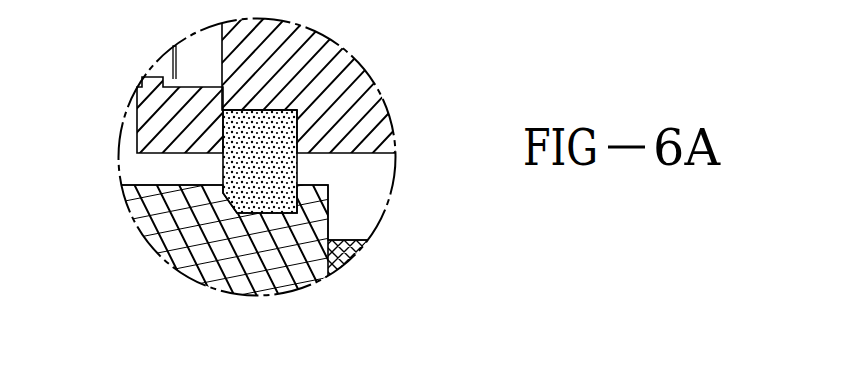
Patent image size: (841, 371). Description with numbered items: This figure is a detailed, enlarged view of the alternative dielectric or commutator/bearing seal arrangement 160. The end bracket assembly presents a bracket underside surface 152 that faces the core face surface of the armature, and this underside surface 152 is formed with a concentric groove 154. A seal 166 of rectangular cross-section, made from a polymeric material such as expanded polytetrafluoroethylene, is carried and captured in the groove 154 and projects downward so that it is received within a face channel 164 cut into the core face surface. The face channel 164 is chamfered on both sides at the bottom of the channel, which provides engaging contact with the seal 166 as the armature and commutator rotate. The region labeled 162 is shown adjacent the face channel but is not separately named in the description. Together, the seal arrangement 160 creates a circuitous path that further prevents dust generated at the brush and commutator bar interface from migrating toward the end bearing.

The bracket underside surface 152 is at (337, 156).
The concentric groove 154 is at (250, 109).
The dielectric seal arrangement 160 is at (372, 221).
The lower substrate top surface 162 is at (160, 184).
The face channel 164 is at (260, 218).
The seal 166 is at (270, 130).